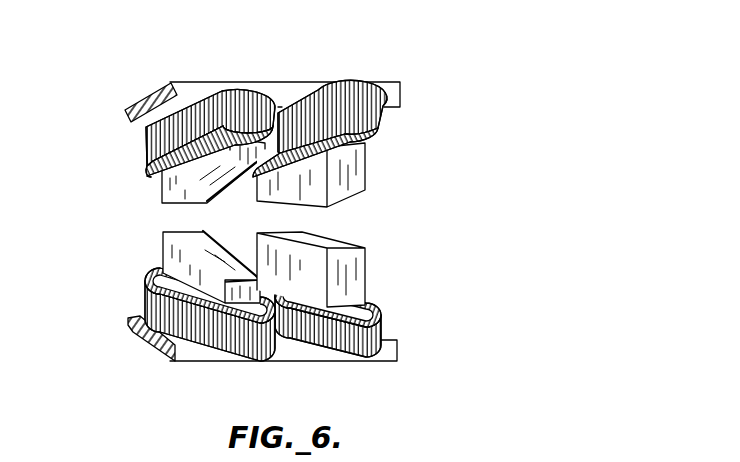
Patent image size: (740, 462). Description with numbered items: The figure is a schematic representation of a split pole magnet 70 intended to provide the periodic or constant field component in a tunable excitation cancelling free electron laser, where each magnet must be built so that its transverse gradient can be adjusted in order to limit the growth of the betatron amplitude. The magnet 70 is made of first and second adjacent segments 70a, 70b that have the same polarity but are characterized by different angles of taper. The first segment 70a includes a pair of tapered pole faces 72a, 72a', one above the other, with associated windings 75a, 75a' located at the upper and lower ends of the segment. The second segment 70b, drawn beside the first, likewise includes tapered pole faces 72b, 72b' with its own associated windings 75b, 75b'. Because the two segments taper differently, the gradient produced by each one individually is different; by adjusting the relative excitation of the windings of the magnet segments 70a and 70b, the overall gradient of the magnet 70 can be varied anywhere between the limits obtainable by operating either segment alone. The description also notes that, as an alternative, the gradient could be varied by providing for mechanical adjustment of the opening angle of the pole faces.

The split pole magnet 70 is at (545, 222).
The first magnet segment 70a is at (160, 248).
The second magnet segment 70b is at (373, 263).
The tapered pole face 72a is at (213, 179).
The tapered pole face 72a' is at (212, 262).
The tapered pole face 72b is at (314, 182).
The tapered pole face 72b' is at (316, 263).
The winding 75a is at (174, 133).
The winding 75b is at (348, 128).
The winding 75a' is at (171, 314).
The winding 75b' is at (362, 320).